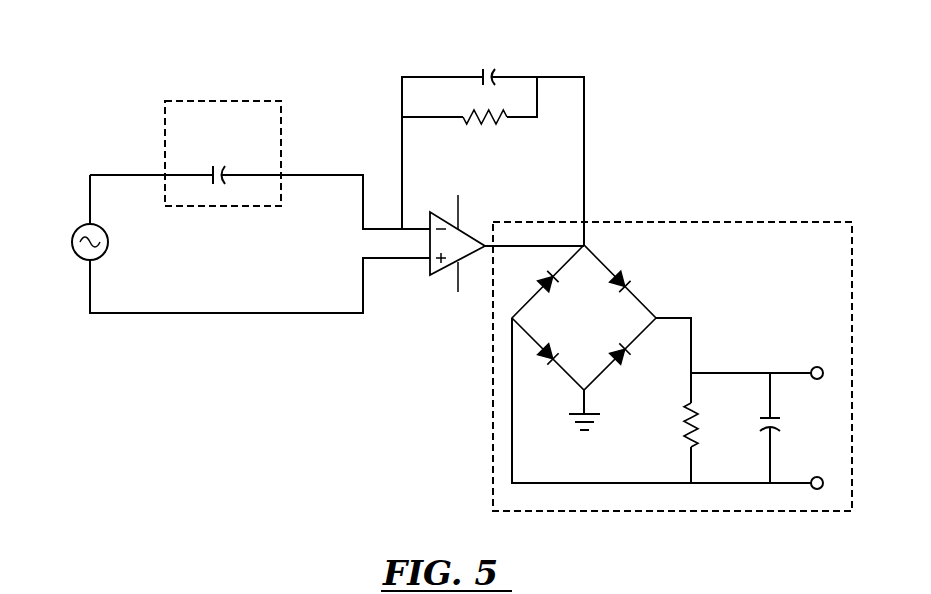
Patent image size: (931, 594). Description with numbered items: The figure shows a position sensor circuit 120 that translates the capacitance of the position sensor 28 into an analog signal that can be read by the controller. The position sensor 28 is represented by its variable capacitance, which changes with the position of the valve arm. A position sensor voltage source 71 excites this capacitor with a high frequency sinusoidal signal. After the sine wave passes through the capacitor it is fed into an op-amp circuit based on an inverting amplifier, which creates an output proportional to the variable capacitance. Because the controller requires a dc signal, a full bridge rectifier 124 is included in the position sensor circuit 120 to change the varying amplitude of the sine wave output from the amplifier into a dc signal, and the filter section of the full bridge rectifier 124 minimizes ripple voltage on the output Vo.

The position sensor 28 is at (165, 113).
The position sensor voltage source 71 is at (77, 258).
The position sensor circuit 120 is at (667, 75).
The full bridge rectifier 124 is at (493, 474).